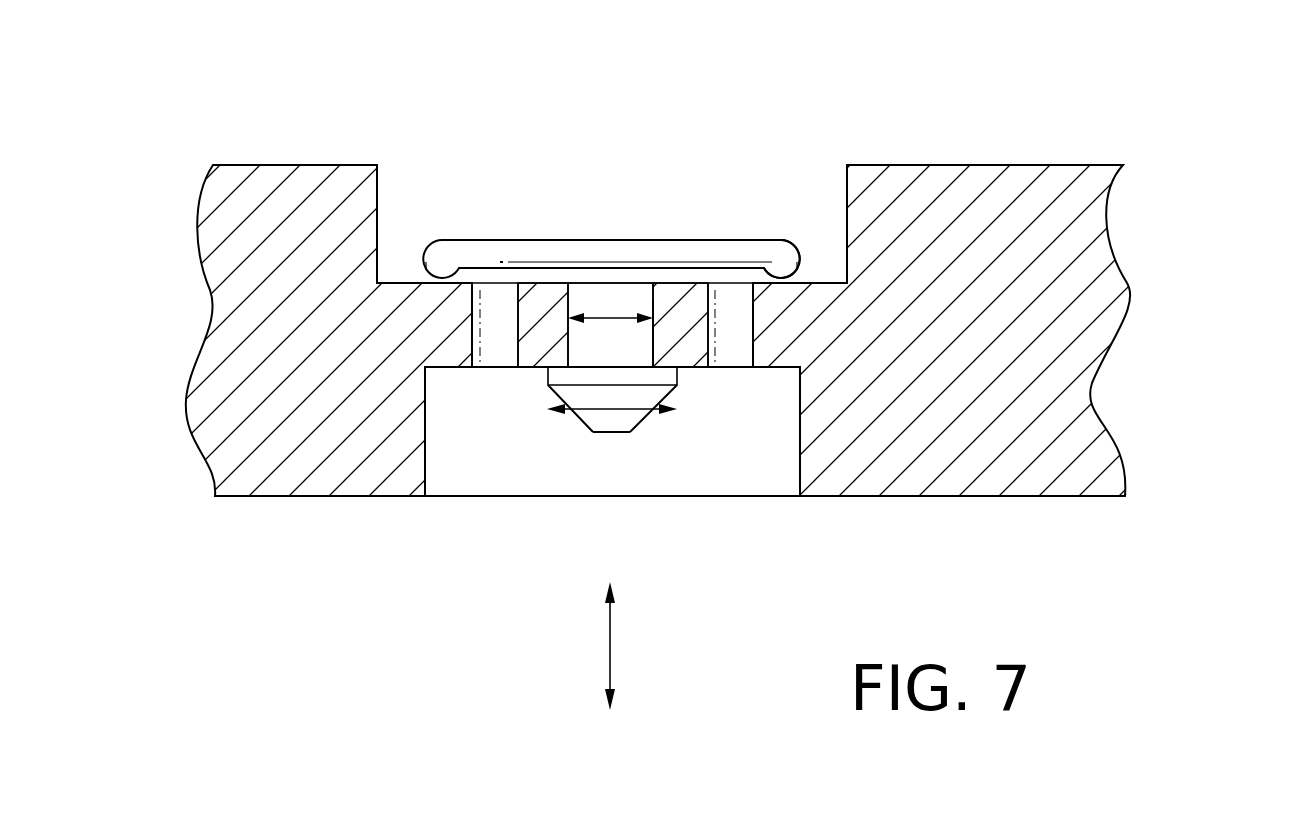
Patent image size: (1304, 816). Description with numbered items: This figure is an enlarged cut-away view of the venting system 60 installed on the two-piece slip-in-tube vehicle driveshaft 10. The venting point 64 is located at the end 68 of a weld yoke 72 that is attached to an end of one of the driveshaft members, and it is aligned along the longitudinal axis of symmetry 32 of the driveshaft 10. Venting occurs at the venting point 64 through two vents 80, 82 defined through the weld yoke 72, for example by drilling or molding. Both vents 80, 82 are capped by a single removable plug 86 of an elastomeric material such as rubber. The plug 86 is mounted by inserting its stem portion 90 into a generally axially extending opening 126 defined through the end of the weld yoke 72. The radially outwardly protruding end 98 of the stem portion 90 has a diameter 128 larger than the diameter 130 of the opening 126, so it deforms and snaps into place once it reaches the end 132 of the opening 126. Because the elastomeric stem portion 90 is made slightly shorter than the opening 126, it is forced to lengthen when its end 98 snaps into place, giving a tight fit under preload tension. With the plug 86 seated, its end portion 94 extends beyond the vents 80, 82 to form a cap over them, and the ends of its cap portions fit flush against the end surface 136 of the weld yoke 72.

The driveshaft 10 is at (1145, 346).
The longitudinal axis of symmetry 32 is at (612, 647).
The venting system 60 is at (757, 150).
The venting point 64 is at (658, 333).
The end of weld yoke 68 is at (522, 378).
The weld yoke 72 is at (257, 427).
The vent 80 is at (488, 328).
The vent 82 is at (742, 328).
The plug 86 is at (543, 240).
The stem portion 90 is at (613, 350).
The end portion 94 is at (802, 248).
The radially outwardly protruding end 98 is at (617, 424).
The opening 126 is at (633, 292).
The diameter of protruding end 128 is at (590, 413).
The diameter of opening 130 is at (612, 317).
The end of opening 132 is at (547, 392).
The end surface 136 is at (400, 283).